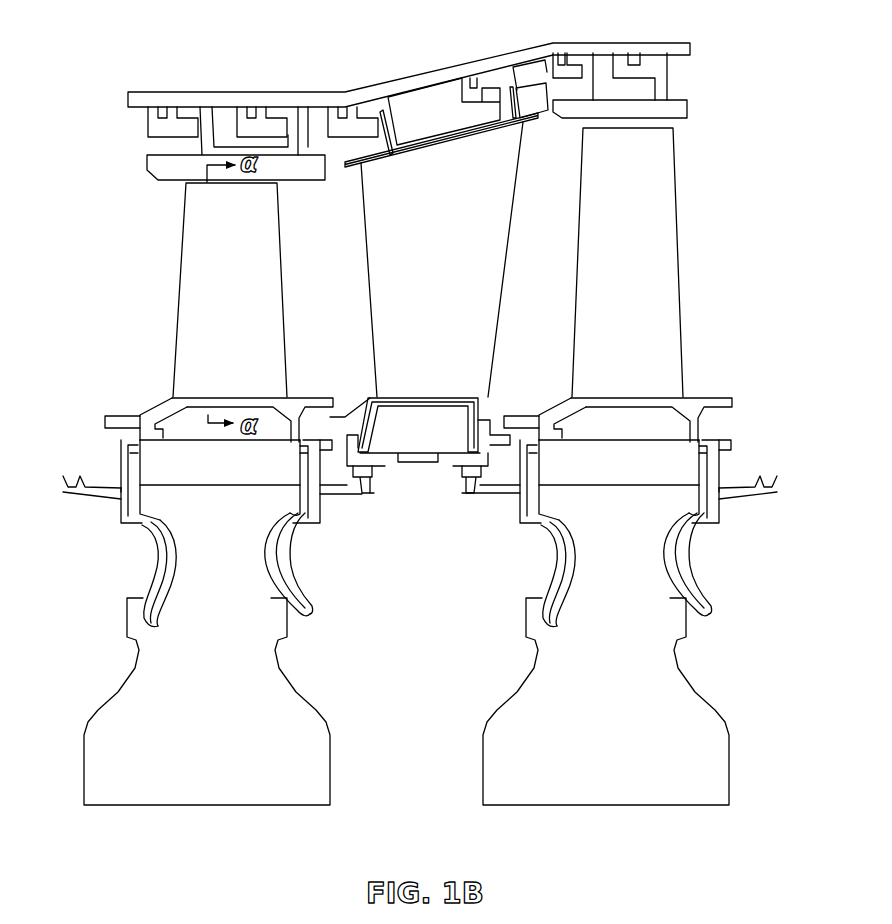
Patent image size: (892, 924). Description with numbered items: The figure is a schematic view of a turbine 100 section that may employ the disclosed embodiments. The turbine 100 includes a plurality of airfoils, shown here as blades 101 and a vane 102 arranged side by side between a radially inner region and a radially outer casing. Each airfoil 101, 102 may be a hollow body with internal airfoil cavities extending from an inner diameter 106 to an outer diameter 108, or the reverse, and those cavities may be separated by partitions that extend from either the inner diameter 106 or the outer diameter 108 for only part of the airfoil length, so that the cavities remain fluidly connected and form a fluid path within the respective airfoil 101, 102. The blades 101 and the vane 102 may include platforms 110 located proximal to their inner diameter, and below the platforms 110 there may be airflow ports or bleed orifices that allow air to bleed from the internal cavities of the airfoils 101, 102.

The turbine 100 is at (115, 48).
The blade 101 is at (268, 275).
The vane 102 is at (492, 270).
The inner diameter 106 is at (363, 388).
The outer diameter 108 is at (163, 193).
The platform 110 is at (507, 393).